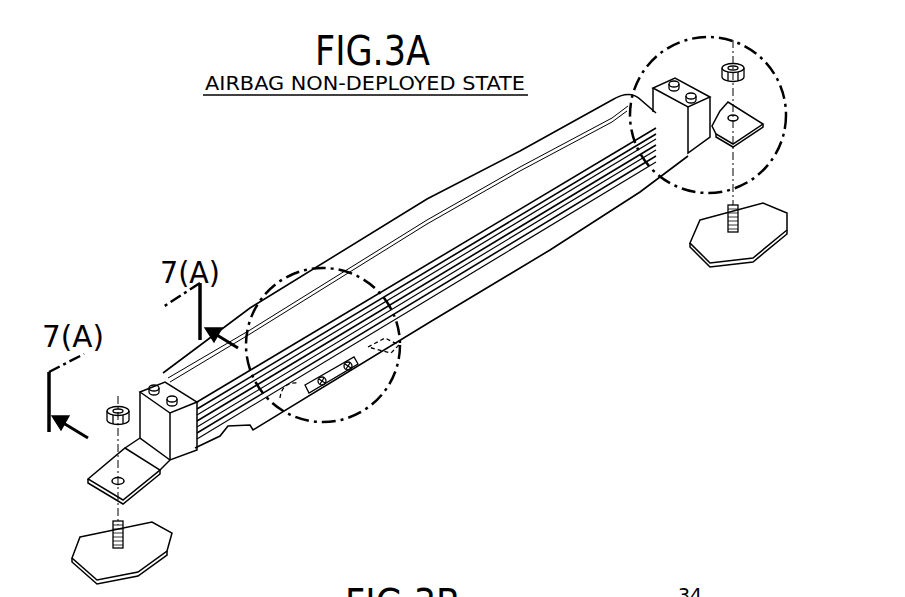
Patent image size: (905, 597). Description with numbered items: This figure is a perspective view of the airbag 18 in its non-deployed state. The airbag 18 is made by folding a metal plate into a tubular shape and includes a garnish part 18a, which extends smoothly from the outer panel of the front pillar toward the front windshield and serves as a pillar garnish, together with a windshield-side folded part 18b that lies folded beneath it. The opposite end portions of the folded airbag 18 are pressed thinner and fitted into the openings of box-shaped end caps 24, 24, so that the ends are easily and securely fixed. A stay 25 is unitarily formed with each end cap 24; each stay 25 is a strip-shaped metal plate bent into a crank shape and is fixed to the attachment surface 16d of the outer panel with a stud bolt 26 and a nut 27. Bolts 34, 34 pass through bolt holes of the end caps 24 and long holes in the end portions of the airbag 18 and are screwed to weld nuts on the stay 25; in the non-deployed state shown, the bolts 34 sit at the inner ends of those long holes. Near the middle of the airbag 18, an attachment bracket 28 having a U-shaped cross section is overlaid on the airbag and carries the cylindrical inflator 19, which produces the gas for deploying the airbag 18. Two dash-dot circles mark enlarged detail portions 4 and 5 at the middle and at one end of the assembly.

The detail portion (airbag middle) 4 is at (378, 397).
The detail portion (airbag end) 5 is at (636, 80).
The attachment surface 16d is at (140, 553).
The airbag 18 is at (352, 237).
The garnish part 18a is at (478, 207).
The windshield-side folded part 18b is at (527, 240).
The inflator 19 is at (386, 346).
The end cap 24 is at (186, 456).
The stay 25 is at (107, 473).
The stud bolt 26 is at (114, 523).
The nut 27 is at (113, 405).
The attachment bracket 28 is at (334, 386).
The bolt 34 is at (172, 395).